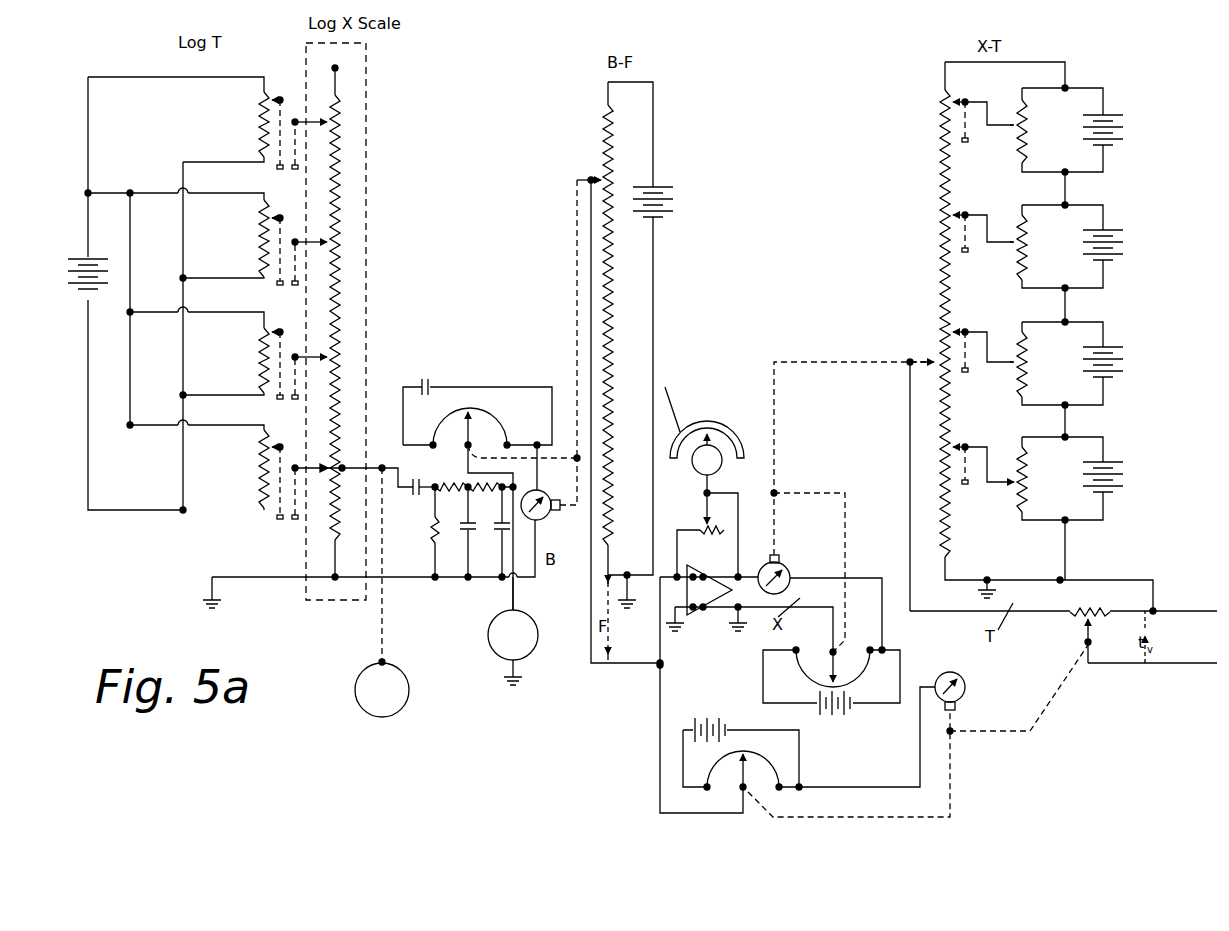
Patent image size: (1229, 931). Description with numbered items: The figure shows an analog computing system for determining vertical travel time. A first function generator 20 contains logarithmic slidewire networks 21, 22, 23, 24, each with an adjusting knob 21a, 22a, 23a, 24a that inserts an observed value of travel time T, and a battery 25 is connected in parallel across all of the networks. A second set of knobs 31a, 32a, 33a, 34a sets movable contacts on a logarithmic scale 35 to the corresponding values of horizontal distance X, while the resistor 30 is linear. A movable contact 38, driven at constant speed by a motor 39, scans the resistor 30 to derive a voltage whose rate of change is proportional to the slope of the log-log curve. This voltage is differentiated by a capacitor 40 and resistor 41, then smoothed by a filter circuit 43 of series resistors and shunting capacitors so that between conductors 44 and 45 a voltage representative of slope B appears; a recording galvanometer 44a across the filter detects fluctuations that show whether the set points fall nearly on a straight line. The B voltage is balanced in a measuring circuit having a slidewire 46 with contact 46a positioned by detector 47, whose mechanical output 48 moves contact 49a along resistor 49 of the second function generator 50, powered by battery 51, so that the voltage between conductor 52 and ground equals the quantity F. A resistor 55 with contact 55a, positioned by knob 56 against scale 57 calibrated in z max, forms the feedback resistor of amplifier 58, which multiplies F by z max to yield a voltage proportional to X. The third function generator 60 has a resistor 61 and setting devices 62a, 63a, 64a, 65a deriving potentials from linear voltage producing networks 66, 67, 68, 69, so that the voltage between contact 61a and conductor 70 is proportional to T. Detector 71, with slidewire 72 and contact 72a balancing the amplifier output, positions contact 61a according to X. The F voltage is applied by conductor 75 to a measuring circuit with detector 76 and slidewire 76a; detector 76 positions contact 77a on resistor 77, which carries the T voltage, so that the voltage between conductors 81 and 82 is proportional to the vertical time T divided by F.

The first function generator 20 is at (295, 71).
The network 21 is at (260, 472).
The adjusting knob 21a is at (273, 519).
The network 22 is at (260, 353).
The adjusting knob 22a is at (273, 398).
The network 23 is at (260, 243).
The adjusting knob 23a is at (273, 285).
The network 24 is at (260, 110).
The adjusting knob 24a is at (273, 167).
The battery 25 is at (78, 255).
The resistor 30 is at (342, 193).
The adjusting knob 31a is at (290, 520).
The adjusting knob 32a is at (292, 399).
The adjusting knob 33a is at (295, 286).
The adjusting knob 34a is at (295, 169).
The scale 35 is at (370, 63).
The movable contact 38 is at (393, 465).
The motor 39 is at (357, 695).
The capacitor 40 is at (415, 492).
The resistor 41 is at (439, 545).
The smoothing circuit 43 is at (497, 515).
The conductor 44 is at (468, 467).
The recording galvanometer 44a is at (495, 645).
The conductor 45 is at (535, 578).
The measuring slidewire 46 is at (450, 410).
The adjustable contact 46a is at (472, 430).
The detector 47 is at (543, 517).
The mechanical output 48 is at (577, 257).
The resistor 49 is at (615, 287).
The contact 49a is at (598, 176).
The second function generator 50 is at (702, 143).
The battery 51 is at (676, 205).
The conductor 52 is at (628, 665).
The resistor 55 is at (702, 525).
The adjustable contact 55a is at (709, 505).
The knob 56 is at (702, 472).
The scale 57 is at (725, 428).
The amplifier 58 is at (707, 595).
The third function generator 60 is at (923, 166).
The resistor 61 is at (945, 112).
The contact 61a is at (942, 360).
The setting device 62a is at (967, 487).
The setting device 63a is at (967, 375).
The setting device 64a is at (968, 257).
The setting device 65a is at (970, 147).
The linear voltage producing network 66 is at (1080, 448).
The linear voltage producing network 67 is at (1073, 328).
The linear voltage producing network 68 is at (1083, 213).
The linear voltage producing network 69 is at (1077, 97).
The conductor 70 is at (992, 578).
The detector 71 is at (780, 570).
The slidewire 72 is at (868, 655).
The contact 72a is at (832, 663).
The conductor 75 is at (658, 785).
The detector 76 is at (965, 687).
The adjustable slidewire 76a is at (773, 763).
The resistor 77 is at (1085, 610).
The adjustable contact 77a is at (1085, 635).
The conductor 81 is at (1180, 610).
The conductor 82 is at (1160, 667).